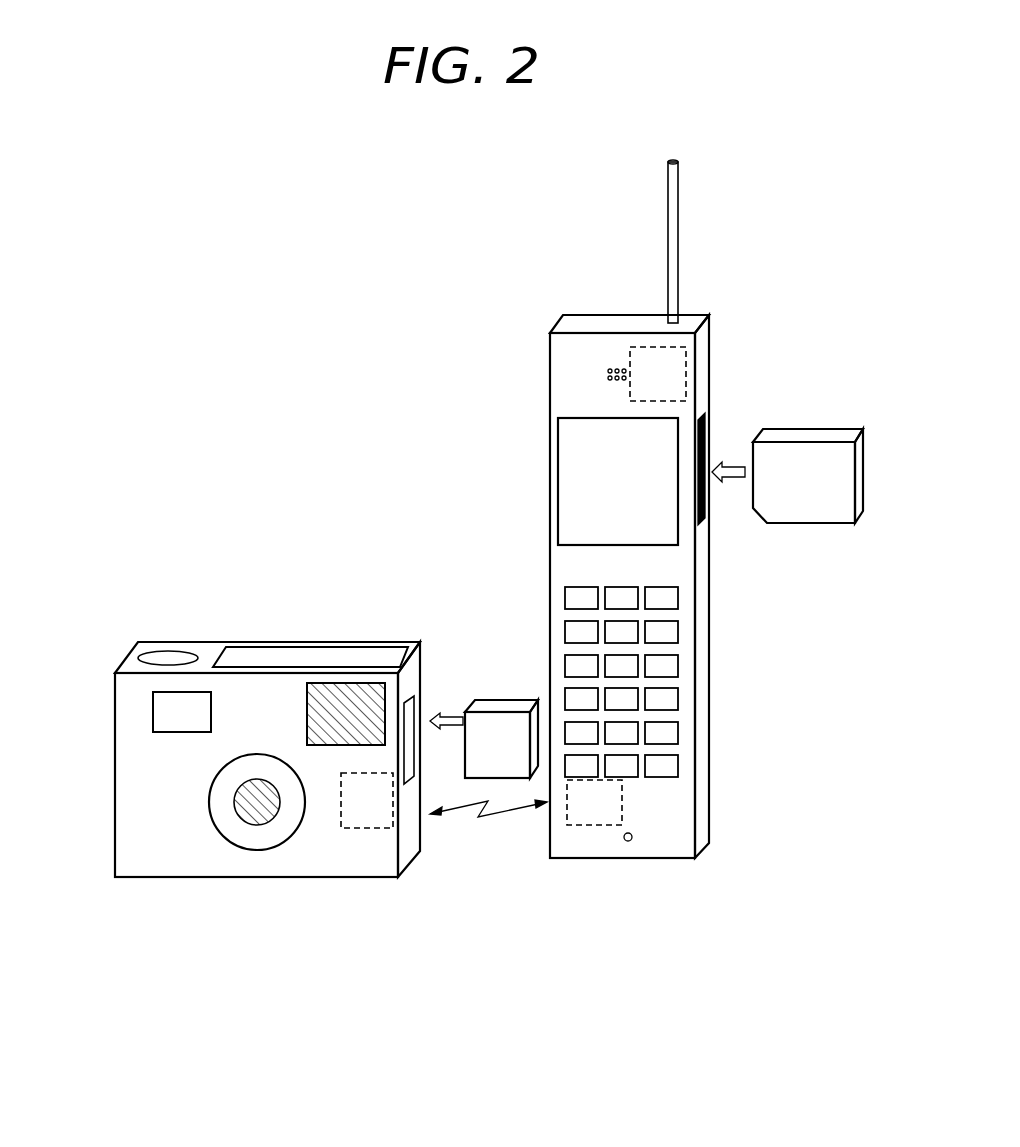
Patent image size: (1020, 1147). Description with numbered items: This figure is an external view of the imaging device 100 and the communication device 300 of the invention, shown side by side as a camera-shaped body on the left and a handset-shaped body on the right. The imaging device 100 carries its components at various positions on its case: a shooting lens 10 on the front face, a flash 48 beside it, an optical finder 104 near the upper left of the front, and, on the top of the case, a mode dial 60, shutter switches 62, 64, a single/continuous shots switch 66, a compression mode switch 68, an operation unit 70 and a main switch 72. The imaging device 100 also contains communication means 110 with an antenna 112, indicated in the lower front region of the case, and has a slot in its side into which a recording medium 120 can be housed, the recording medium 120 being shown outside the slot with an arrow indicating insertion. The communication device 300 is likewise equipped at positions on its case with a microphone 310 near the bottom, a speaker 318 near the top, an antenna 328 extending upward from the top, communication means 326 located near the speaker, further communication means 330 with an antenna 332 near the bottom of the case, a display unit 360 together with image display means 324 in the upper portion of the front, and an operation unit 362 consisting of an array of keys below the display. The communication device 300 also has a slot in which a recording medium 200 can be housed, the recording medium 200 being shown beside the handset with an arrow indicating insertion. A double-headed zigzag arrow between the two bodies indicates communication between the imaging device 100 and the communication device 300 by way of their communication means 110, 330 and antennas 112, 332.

The shooting lens 10 is at (247, 825).
The flash 48 is at (320, 746).
The mode dial 60 is at (310, 615).
The shutter switch 62 is at (185, 628).
The shutter switch 64 is at (175, 655).
The single/continuous shots switch 66 is at (310, 615).
The compression mode switch 68 is at (310, 615).
The operation unit 70 is at (310, 615).
The main switch 72 is at (310, 653).
The imaging device 100 is at (168, 870).
The optical finder 104 is at (160, 712).
The communication means 110 is at (384, 852).
The antenna 112 is at (377, 829).
The recording medium 120 is at (508, 703).
The recording medium 200 is at (832, 430).
The communication device 300 is at (548, 493).
The microphone 310 is at (628, 841).
The speaker 318 is at (610, 368).
The image display means 324 is at (572, 418).
The communication means 326 is at (686, 365).
The antenna 328 is at (678, 238).
The communication means 330 is at (561, 843).
The antenna 332 is at (578, 825).
The display unit 360 is at (553, 449).
The operation unit 362 is at (713, 587).